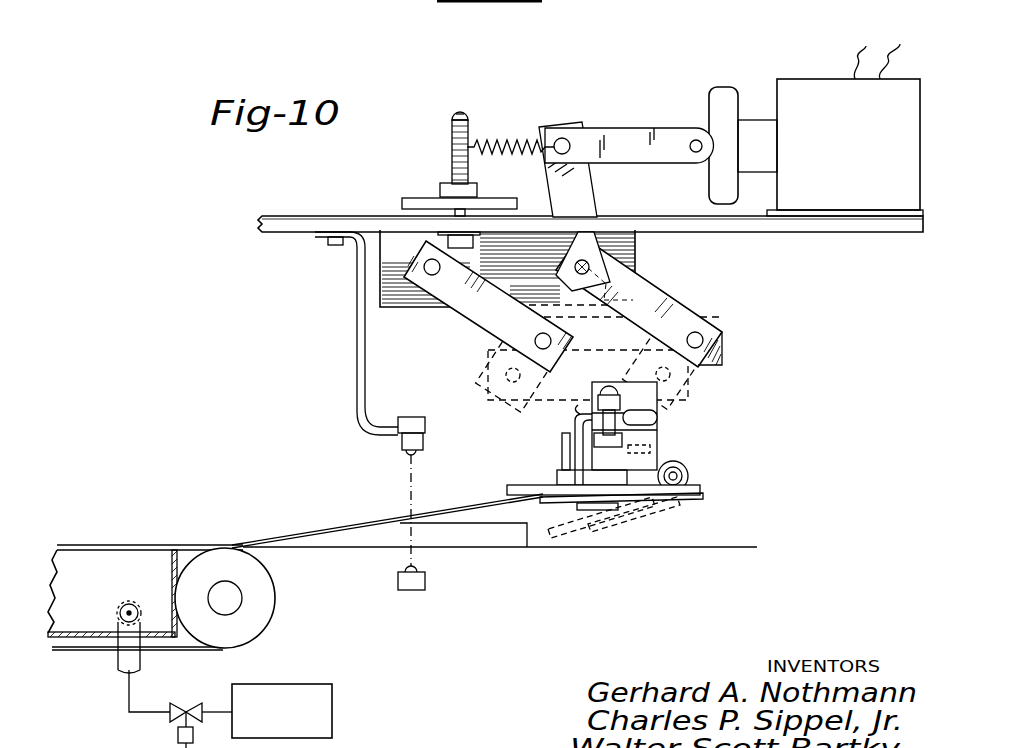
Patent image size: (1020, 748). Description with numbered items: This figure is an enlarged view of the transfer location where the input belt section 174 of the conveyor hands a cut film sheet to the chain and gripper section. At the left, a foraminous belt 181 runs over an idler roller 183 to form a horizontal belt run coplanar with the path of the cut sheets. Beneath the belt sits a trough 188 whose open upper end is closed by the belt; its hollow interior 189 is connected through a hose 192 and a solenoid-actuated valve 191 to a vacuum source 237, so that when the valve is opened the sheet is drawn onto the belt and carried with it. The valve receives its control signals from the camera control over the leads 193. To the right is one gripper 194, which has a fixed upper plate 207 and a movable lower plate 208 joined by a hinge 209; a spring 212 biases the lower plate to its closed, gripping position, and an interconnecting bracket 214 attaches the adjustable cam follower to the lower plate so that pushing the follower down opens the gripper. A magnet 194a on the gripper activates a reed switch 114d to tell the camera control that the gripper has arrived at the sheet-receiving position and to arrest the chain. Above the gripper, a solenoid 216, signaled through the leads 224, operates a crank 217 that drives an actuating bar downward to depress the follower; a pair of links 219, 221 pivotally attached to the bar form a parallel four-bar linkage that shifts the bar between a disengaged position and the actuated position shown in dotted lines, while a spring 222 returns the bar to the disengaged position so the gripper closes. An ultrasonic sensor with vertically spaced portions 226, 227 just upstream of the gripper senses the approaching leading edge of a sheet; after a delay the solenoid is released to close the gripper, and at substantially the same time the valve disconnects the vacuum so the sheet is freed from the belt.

The reed switch 114d is at (660, 418).
The input belt section 174 is at (250, 548).
The foraminous belt 181 is at (138, 518).
The idler roller 183 is at (228, 565).
The trough 188 is at (170, 570).
The hollow interior 189 is at (76, 555).
The solenoid-actuated valve 191 is at (198, 705).
The hose 192 is at (118, 660).
The leads 193 is at (178, 736).
The gripper 194 is at (676, 502).
The magnet 194a is at (652, 448).
The fixed upper plate 207 is at (530, 466).
The movable lower plate 208 is at (553, 499).
The hinge 209 is at (682, 478).
The spring 212 is at (585, 357).
The interconnecting bracket 214 is at (575, 423).
The solenoid 216 is at (812, 88).
The crank 217 is at (585, 195).
The link 219 is at (482, 313).
The link 221 is at (647, 298).
The spring 222 is at (512, 143).
The leads 224 is at (877, 48).
The ultrasonic sensor portion 226 is at (398, 440).
The ultrasonic sensor portion 227 is at (426, 582).
The vacuum source 237 is at (332, 716).